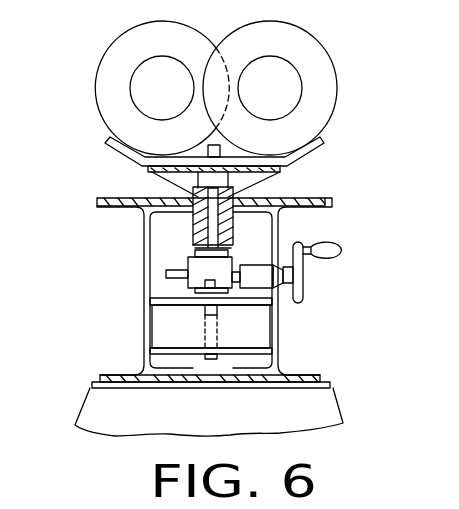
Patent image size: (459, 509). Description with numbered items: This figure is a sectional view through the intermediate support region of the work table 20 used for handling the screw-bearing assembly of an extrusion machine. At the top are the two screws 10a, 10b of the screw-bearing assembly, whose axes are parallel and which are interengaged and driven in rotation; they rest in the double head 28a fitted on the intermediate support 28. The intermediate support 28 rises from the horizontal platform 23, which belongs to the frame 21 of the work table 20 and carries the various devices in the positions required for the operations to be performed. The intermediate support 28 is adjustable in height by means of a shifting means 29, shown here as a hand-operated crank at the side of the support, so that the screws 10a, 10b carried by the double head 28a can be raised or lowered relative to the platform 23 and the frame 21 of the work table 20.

The screw 10a is at (328, 98).
The screw 10b is at (108, 97).
The double head 28a is at (124, 153).
The intermediate support 28 is at (142, 185).
The horizontal platform 23 is at (98, 199).
The work table 20 is at (133, 298).
The frame 21 is at (278, 343).
The shifting means 29 is at (330, 250).